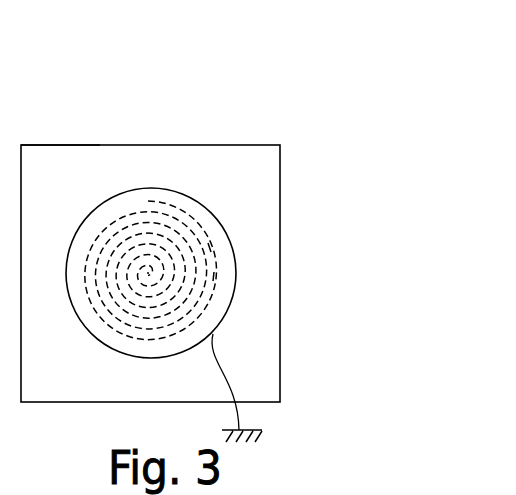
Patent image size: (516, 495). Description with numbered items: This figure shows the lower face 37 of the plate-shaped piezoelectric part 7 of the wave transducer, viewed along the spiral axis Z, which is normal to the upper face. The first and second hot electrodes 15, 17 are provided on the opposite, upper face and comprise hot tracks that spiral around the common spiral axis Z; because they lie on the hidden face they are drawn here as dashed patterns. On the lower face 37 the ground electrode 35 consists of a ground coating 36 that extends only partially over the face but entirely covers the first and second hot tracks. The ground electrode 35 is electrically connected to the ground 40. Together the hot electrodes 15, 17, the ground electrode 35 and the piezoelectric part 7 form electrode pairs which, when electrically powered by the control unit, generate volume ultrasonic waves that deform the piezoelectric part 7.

The piezoelectric part 7 is at (240, 170).
The lower face 37 is at (33, 172).
The ground electrode 35 is at (112, 213).
The ground coating 36 is at (148, 201).
The first hot electrode 15 is at (209, 249).
The second hot electrode 17 is at (213, 277).
The ground 40 is at (255, 430).
The spiral axis z is at (148, 275).